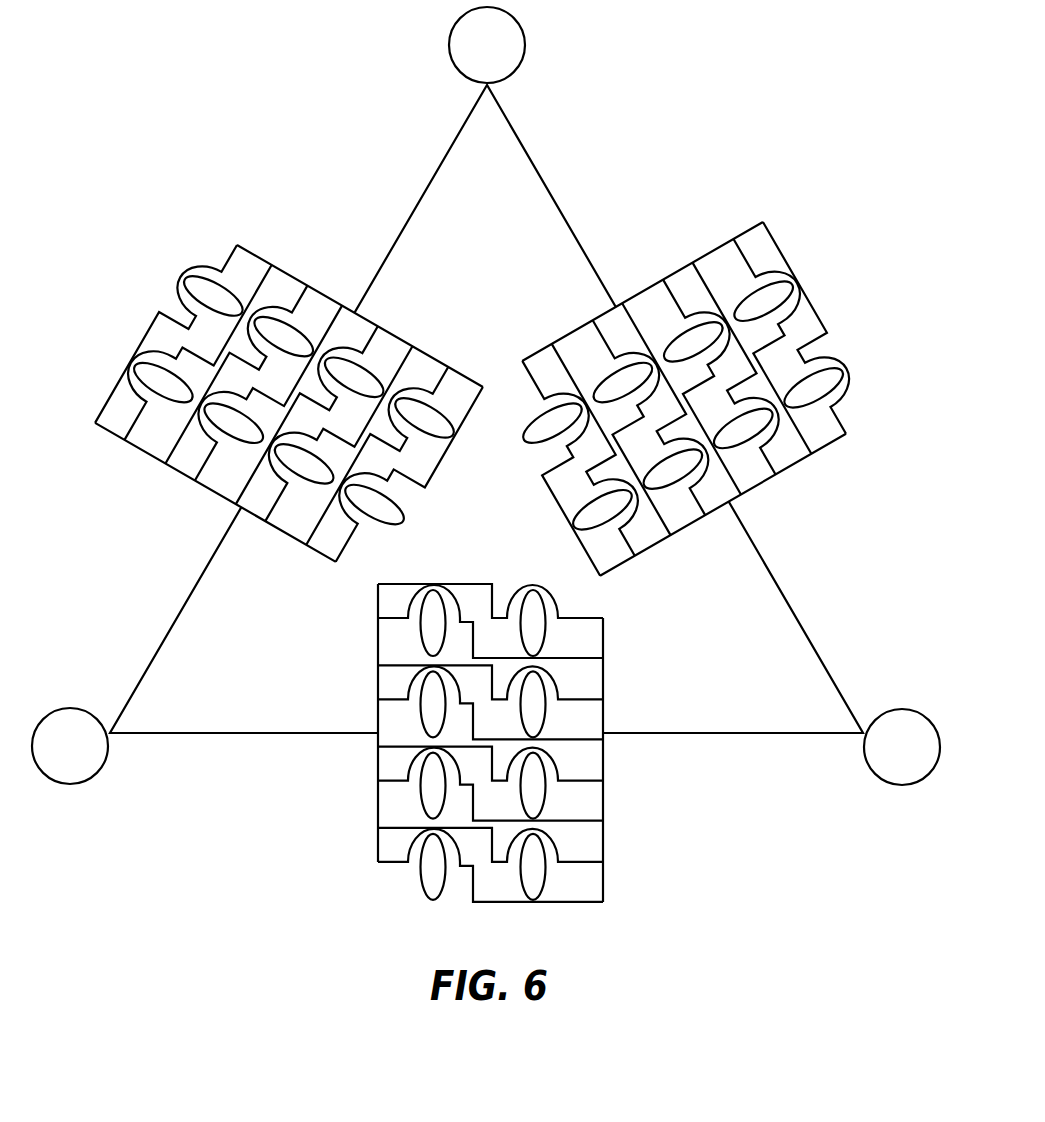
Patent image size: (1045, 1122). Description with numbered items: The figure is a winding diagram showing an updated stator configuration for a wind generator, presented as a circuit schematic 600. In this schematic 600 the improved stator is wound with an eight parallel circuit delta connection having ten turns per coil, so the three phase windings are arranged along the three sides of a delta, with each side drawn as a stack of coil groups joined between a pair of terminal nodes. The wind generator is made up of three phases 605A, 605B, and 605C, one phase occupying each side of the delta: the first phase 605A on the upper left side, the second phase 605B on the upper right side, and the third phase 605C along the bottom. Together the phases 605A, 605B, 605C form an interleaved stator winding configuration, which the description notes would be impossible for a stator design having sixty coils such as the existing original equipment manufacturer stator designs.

The circuit schematic 600 is at (623, 65).
The phase 605A is at (122, 281).
The phase 605B is at (842, 277).
The phase 605C is at (355, 817).